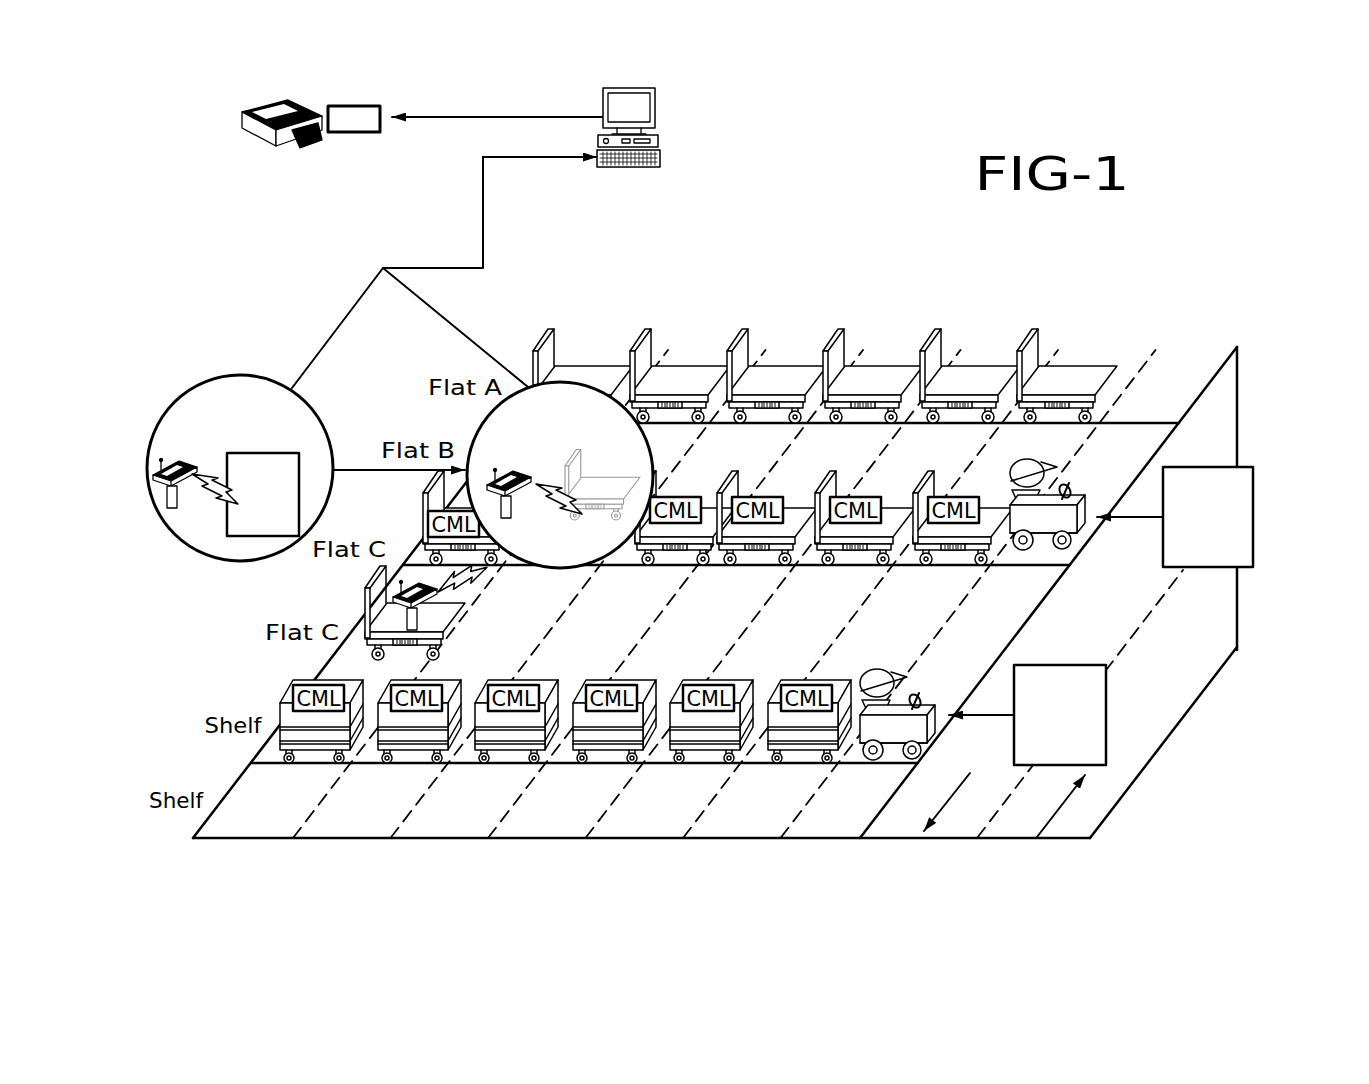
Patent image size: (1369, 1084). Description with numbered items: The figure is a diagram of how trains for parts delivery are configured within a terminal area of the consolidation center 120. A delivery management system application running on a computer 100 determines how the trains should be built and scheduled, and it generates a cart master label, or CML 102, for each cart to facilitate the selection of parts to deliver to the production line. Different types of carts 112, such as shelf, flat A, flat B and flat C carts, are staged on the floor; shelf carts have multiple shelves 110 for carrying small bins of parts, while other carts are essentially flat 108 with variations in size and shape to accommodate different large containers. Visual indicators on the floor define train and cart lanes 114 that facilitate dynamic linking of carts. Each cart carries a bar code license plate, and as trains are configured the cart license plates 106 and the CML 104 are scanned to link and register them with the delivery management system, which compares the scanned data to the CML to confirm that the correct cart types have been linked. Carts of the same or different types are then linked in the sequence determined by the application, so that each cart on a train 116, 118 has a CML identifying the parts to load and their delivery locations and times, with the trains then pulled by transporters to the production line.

The computer 100 is at (702, 144).
The cart master label (CML) 102 is at (407, 159).
The CML scanning 104 is at (218, 380).
The cart license plate 106 is at (588, 386).
The flat carts 108 is at (893, 512).
The shelves 110 is at (410, 747).
The carts 112 is at (222, 644).
The train and cart lanes 114 is at (673, 803).
The train 116 is at (1253, 555).
The train 118 is at (1106, 695).
The consolidation center 120 is at (1164, 787).